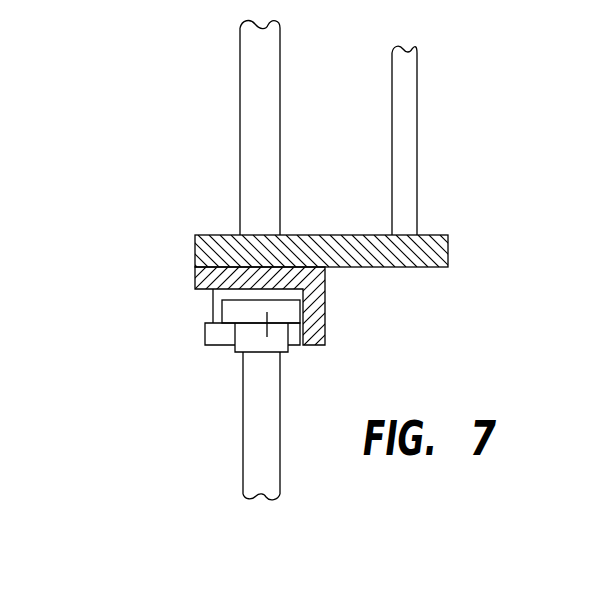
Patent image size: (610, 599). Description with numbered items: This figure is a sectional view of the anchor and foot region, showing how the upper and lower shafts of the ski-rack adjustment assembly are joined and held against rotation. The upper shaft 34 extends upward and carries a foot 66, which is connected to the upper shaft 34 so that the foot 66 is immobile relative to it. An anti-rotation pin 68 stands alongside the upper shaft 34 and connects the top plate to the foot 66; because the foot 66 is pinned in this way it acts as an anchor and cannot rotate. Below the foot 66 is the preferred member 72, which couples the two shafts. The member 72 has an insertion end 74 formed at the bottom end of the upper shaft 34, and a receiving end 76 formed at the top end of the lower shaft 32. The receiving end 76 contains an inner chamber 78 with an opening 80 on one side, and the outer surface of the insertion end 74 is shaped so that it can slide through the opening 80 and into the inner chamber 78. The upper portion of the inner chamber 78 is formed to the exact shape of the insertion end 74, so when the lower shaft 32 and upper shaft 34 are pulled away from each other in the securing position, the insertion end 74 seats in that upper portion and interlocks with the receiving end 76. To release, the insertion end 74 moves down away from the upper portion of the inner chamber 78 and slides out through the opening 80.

The lower shaft 32 is at (243, 418).
The upper shaft 34 is at (280, 100).
The foot 66 is at (465, 243).
The anti-rotation pin 68 is at (417, 132).
The member 72 is at (172, 272).
The insertion end 74 is at (320, 302).
The receiving end 76 is at (267, 312).
The inner chamber 78 is at (215, 308).
The opening 80 is at (213, 308).